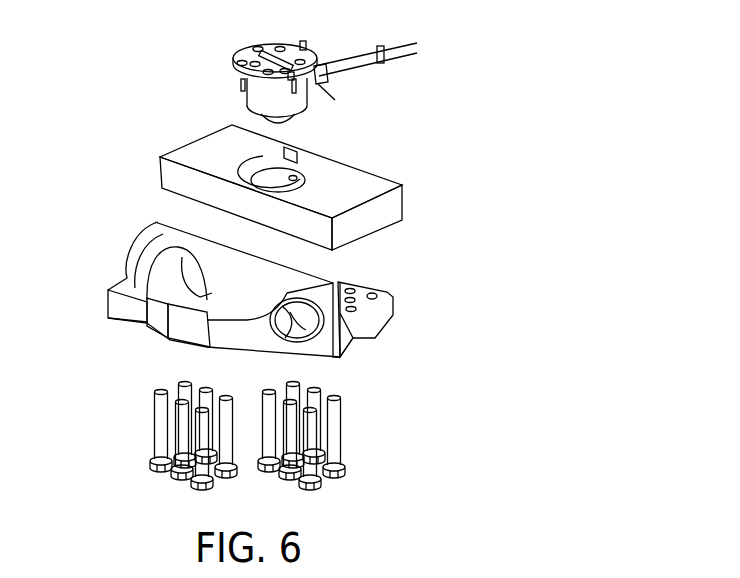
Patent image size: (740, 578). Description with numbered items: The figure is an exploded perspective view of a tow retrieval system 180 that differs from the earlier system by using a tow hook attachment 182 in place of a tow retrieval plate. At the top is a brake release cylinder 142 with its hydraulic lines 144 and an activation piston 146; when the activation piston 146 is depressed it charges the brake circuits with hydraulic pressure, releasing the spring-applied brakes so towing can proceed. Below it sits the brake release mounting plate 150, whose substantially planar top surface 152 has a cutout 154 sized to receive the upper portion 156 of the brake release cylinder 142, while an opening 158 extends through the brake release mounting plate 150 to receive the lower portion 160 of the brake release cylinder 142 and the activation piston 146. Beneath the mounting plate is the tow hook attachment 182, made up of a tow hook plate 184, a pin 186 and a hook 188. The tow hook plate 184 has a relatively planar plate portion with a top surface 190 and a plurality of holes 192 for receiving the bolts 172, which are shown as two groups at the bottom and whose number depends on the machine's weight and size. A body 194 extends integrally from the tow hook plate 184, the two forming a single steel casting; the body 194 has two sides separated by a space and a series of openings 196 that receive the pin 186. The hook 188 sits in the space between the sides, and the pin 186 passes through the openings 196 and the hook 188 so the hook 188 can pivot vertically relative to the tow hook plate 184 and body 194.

The tow retrieval system 180 is at (134, 64).
The brake release cylinder 142 is at (262, 50).
The upper portion 156 is at (258, 83).
The cutout 154 is at (262, 152).
The top surface 152 is at (205, 150).
The brake release mounting plate 150 is at (160, 173).
The opening 158 is at (302, 172).
The lower portion 160 is at (289, 101).
The activation piston 146 is at (277, 121).
The hydraulic lines 144 is at (353, 70).
The body 194 is at (128, 285).
The top surface 190 is at (345, 282).
The holes 192 is at (376, 288).
The hook 188 is at (158, 313).
The tow hook plate 184 is at (366, 327).
The pin 186 is at (303, 327).
The openings 196 is at (297, 315).
The tow hook attachment 182 is at (346, 353).
The bolts 172 is at (153, 426).